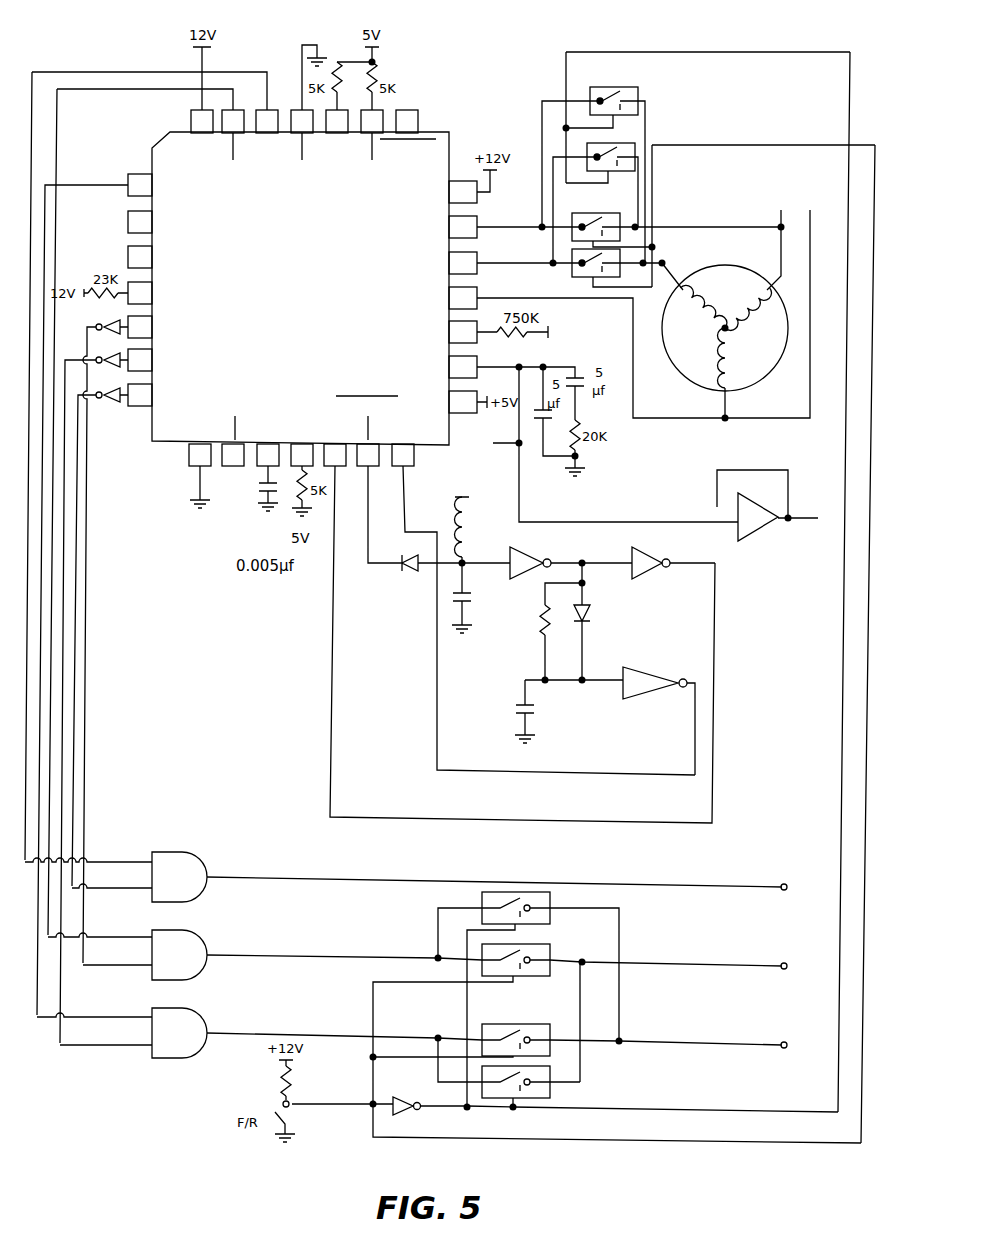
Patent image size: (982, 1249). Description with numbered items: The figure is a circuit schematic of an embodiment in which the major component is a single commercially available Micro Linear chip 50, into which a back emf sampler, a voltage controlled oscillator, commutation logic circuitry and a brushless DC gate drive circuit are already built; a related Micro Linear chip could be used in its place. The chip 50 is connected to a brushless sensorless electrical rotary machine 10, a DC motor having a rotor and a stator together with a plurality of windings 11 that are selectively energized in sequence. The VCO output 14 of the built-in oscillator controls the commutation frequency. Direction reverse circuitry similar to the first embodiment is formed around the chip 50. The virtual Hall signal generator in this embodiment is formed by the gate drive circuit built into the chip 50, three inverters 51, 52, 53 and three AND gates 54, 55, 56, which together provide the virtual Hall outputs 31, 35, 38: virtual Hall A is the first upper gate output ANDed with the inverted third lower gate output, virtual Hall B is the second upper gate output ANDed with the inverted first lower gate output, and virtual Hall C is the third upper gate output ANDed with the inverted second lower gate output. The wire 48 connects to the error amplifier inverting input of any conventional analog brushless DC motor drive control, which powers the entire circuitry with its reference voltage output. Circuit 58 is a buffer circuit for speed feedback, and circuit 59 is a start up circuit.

The brushless sensorless electrical rotary machine 10 is at (685, 424).
The windings 11 is at (692, 301).
The VCO output 14 is at (300, 430).
The virtual Hall output 31 is at (728, 888).
The virtual Hall output 35 is at (718, 966).
The virtual Hall output 38 is at (720, 1045).
The wire 48 is at (800, 514).
The ML 4410 chip 50 is at (146, 449).
The inverter 51 is at (112, 403).
The inverter 52 is at (99, 323).
The inverter 53 is at (99, 357).
The AND gate 54 is at (180, 854).
The AND gate 55 is at (208, 938).
The AND gate 56 is at (206, 1015).
The buffer circuit 58 is at (739, 596).
The start up circuit 59 is at (735, 659).